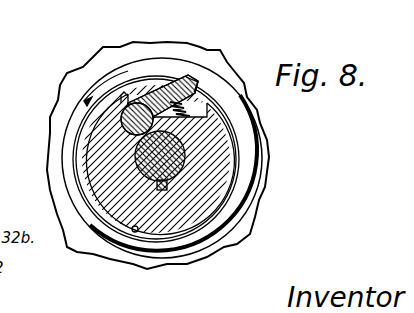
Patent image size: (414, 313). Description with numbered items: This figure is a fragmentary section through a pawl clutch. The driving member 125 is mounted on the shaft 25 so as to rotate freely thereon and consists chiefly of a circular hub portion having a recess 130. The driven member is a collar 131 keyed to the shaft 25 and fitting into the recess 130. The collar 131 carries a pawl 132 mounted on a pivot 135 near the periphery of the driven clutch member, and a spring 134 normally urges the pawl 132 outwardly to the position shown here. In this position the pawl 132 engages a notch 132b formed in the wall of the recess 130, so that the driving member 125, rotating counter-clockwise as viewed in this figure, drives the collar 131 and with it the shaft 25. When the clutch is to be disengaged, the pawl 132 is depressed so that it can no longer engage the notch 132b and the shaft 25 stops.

The shaft 25 is at (185, 154).
The driving member 125 is at (228, 219).
The recess 130 is at (135, 231).
The collar 131 is at (200, 183).
The pawl 132 is at (157, 91).
The notch 132b is at (199, 80).
The spring 134 is at (192, 110).
The pivot 135 is at (123, 118).